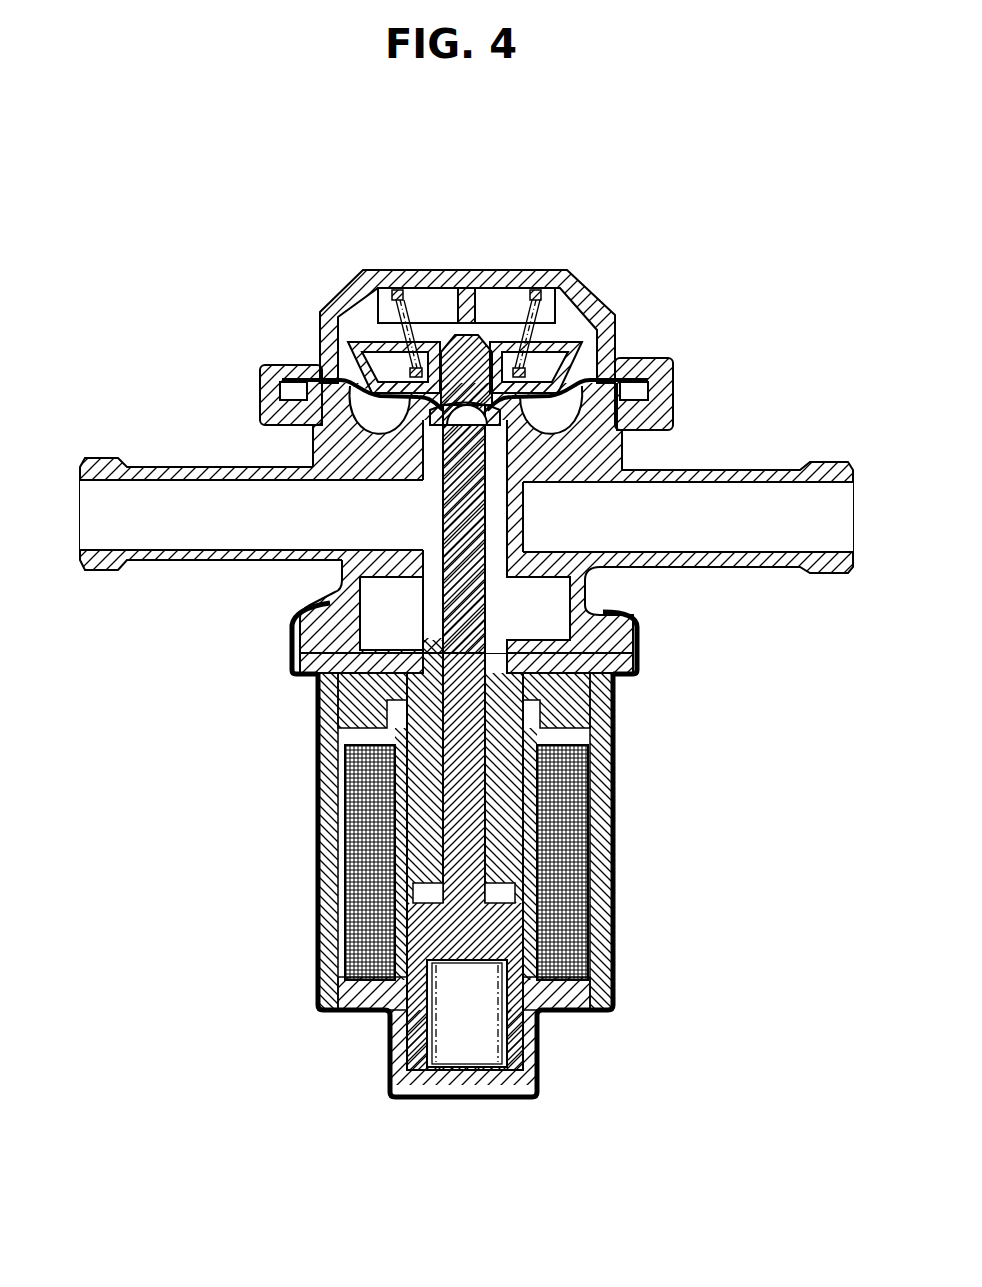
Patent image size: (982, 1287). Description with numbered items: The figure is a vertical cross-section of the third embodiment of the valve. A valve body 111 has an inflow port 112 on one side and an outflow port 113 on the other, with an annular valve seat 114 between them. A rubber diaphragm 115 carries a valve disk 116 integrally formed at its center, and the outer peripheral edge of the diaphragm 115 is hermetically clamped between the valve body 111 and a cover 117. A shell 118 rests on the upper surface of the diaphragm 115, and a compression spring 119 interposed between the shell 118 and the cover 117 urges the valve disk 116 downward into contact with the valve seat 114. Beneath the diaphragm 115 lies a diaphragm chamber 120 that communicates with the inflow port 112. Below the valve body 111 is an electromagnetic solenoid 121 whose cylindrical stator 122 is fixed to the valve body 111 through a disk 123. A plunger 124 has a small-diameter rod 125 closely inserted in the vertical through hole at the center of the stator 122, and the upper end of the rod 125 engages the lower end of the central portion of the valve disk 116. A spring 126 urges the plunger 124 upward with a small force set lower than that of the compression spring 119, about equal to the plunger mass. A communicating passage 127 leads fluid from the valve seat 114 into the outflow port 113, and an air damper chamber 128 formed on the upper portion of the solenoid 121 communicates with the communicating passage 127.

The valve body 111 is at (313, 440).
The inflow port 112 is at (815, 464).
The outflow port 113 is at (118, 456).
The annular valve seat 114 is at (527, 410).
The diaphragm 115 is at (617, 358).
The valve disk 116 is at (533, 405).
The cover 117 is at (352, 287).
The shell 118 is at (345, 355).
The compression spring 119 is at (403, 297).
The diaphragm chamber 120 is at (312, 362).
The electromagnetic solenoid 121 is at (612, 920).
The stator 122 is at (510, 803).
The disk 123 is at (640, 667).
The plunger 124 is at (510, 932).
The rod 125 is at (473, 612).
The spring 126 is at (423, 1048).
The communicating passage 127 is at (433, 503).
The air damper chamber 128 is at (425, 626).